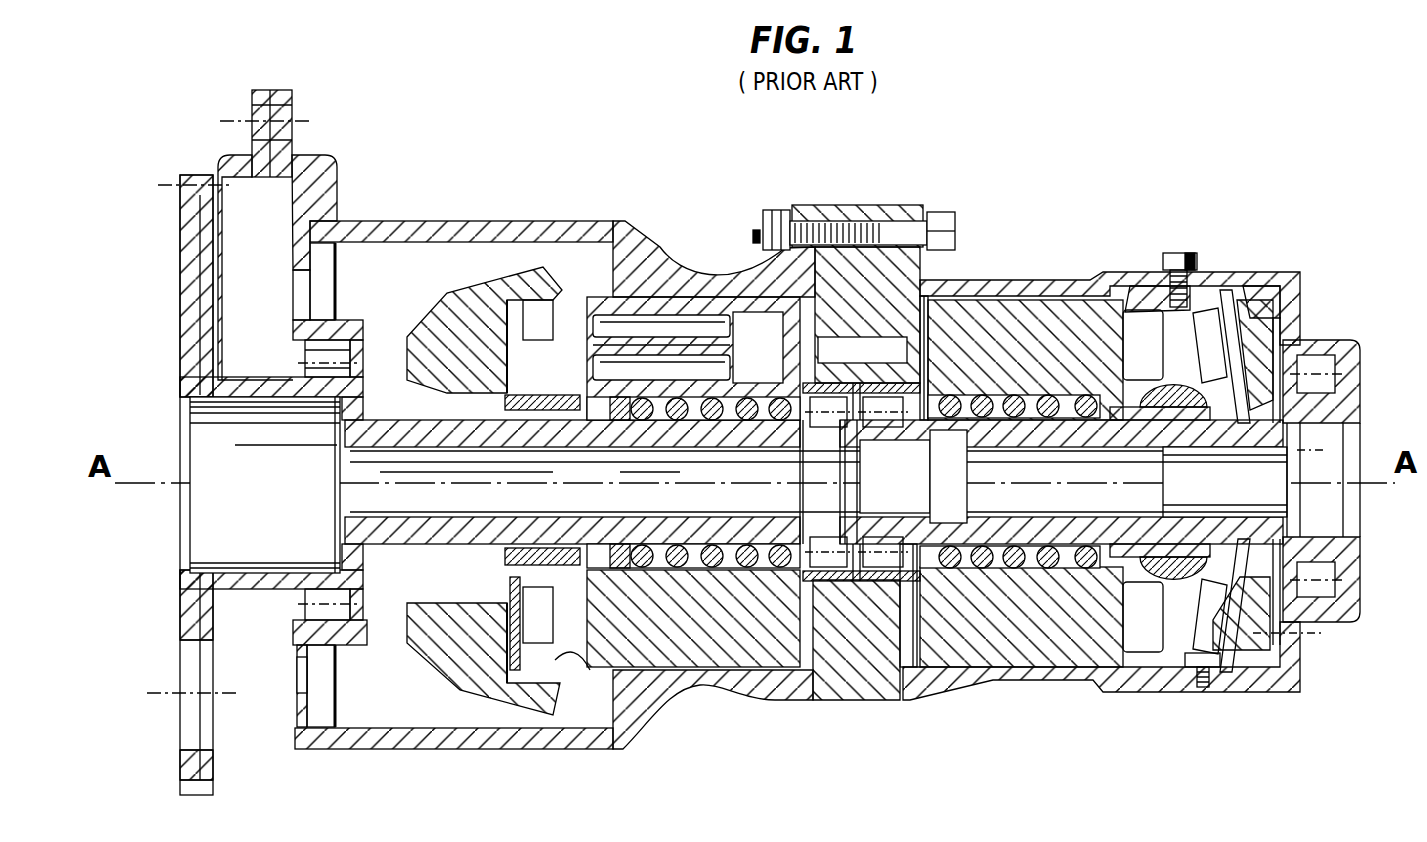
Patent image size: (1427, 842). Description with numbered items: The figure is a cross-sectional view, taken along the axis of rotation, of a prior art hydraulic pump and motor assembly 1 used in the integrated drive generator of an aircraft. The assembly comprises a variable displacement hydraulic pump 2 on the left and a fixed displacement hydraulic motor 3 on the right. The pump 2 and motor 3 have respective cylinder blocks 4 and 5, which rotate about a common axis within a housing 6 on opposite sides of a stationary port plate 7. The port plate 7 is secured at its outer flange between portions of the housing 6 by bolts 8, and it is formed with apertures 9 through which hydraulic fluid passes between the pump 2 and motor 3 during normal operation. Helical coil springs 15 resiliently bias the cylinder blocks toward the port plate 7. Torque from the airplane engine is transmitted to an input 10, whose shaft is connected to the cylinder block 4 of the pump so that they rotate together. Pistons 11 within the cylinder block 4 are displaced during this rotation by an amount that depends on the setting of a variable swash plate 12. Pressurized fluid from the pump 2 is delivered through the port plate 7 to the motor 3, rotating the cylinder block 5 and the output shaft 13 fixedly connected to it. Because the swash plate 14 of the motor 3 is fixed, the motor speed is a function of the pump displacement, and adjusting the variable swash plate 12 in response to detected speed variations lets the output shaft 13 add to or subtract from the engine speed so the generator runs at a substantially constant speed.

The hydraulic pump and motor assembly 1 is at (593, 47).
The variable displacement hydraulic pump 2 is at (593, 675).
The fixed displacement hydraulic motor 3 is at (1111, 672).
The cylinder block 4 is at (777, 313).
The cylinder block 5 is at (1103, 310).
The housing 6 is at (628, 240).
The stationary port plate 7 is at (853, 282).
The bolts 8 is at (940, 212).
The apertures 9 is at (942, 283).
The input 10 is at (190, 206).
The pistons 11 is at (727, 313).
The variable swash plate 12 is at (500, 330).
The output shaft 13 is at (1343, 410).
The swash plate 14 is at (1288, 333).
The helical coil springs 15 is at (777, 565).